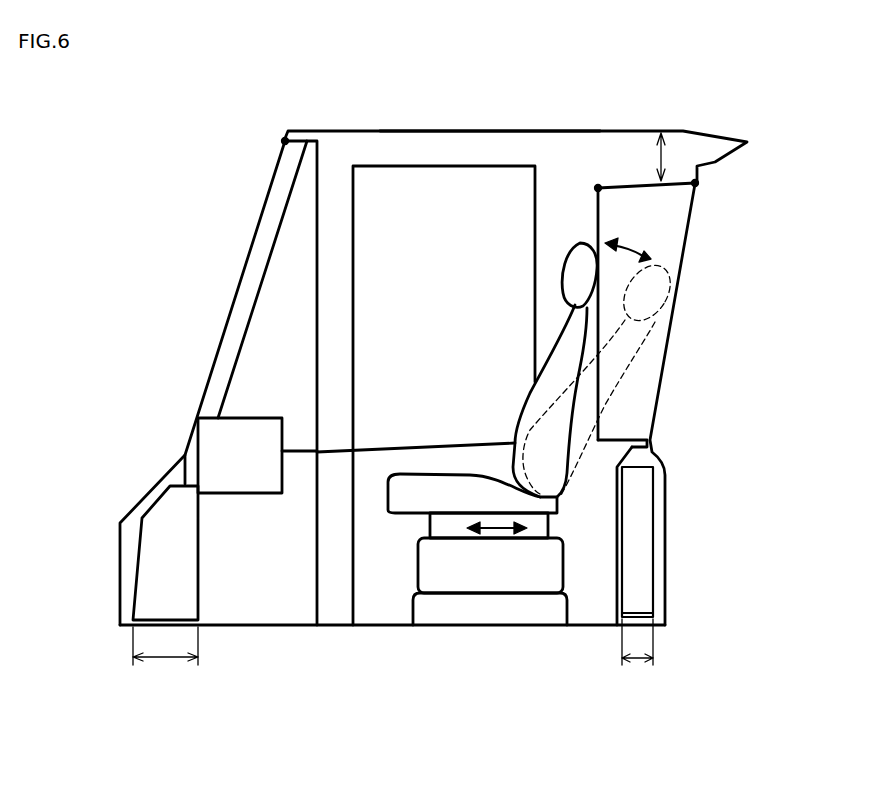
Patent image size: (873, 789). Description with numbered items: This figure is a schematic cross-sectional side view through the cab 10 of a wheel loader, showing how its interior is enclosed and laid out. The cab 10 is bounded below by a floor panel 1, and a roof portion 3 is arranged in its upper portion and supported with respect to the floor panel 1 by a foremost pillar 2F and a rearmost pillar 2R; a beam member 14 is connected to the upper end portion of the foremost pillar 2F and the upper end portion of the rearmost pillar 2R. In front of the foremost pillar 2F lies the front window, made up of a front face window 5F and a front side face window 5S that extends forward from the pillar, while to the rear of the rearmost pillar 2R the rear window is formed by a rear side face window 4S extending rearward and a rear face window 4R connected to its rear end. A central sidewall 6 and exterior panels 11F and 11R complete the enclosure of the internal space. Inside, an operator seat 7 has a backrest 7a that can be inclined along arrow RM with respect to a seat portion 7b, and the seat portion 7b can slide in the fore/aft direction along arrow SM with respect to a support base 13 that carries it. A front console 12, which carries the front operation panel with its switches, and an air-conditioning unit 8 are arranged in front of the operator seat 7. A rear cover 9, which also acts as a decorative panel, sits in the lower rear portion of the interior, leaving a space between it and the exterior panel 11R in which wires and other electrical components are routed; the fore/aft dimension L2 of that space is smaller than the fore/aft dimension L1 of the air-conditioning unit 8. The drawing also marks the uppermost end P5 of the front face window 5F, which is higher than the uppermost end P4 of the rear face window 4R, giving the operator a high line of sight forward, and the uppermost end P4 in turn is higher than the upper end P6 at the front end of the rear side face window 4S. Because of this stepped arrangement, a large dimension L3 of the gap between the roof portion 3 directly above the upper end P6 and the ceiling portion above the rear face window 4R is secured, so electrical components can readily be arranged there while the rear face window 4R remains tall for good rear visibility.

The floor panel 1 is at (634, 626).
The foremost pillar 2F is at (337, 217).
The rearmost pillar 2R is at (563, 210).
The roof portion 3 is at (481, 128).
The rear side face window 4S is at (643, 365).
The rear face window 4R is at (662, 397).
The front face window 5F is at (258, 270).
The front side face window 5S is at (280, 328).
The central sidewall 6 is at (433, 220).
The operator seat 7 is at (580, 241).
The backrest 7a is at (560, 373).
The seat portion 7b is at (425, 497).
The air-conditioning unit 8 is at (168, 535).
The rear cover 9 is at (624, 555).
The cab 10 is at (699, 123).
The exterior panel 11F is at (120, 578).
The exterior panel 11R is at (665, 522).
The front console 12 is at (230, 448).
The support base 13 is at (457, 572).
The beam member 14 is at (368, 152).
The uppermost end of rear face window P4 is at (698, 183).
The uppermost end of front face window P5 is at (284, 140).
The upper end at front end of rear side face window P6 is at (600, 185).
The dimension of air-conditioning unit L1 is at (165, 654).
The dimension of space L2 is at (637, 652).
The dimension of gap L3 is at (662, 157).
The arrow RM is at (631, 241).
The arrow SM is at (494, 533).